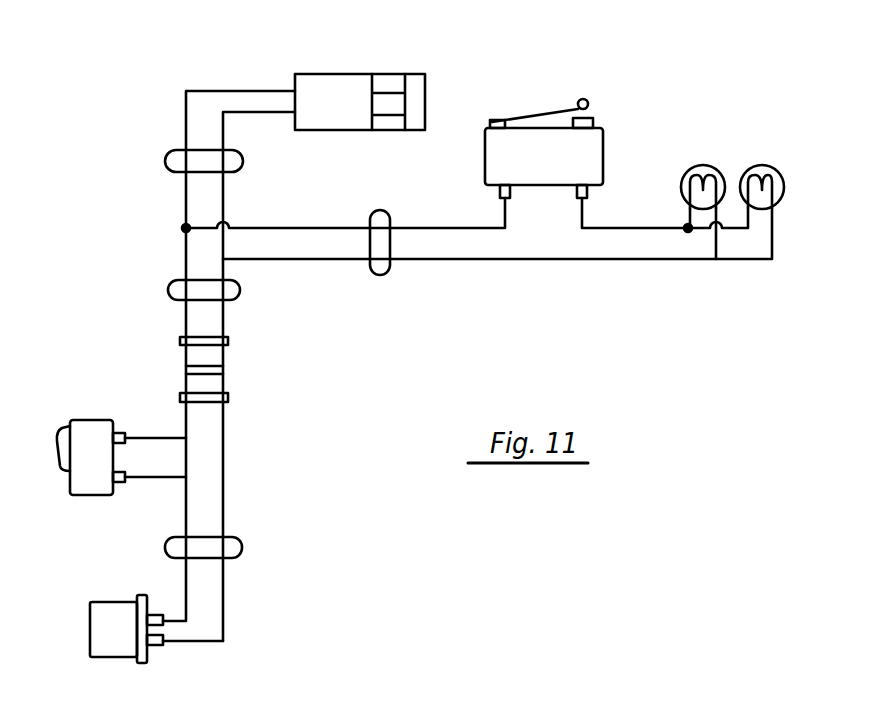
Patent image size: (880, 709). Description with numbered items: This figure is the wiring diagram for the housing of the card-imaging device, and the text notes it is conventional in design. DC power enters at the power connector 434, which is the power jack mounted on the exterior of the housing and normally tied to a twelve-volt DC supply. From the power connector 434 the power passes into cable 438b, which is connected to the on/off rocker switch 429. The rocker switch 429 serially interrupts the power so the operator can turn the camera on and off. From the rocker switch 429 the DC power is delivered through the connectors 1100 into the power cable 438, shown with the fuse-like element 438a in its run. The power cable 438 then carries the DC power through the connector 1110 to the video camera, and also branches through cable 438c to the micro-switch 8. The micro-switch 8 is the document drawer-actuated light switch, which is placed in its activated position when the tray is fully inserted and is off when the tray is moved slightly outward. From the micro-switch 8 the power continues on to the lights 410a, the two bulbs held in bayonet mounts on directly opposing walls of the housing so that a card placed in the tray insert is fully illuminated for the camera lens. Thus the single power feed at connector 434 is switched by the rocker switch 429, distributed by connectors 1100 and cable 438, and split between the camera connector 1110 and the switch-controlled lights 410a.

The connector 1110 is at (345, 75).
The power cable 438 is at (165, 155).
The fuse 438a is at (241, 290).
The cable 438b is at (242, 552).
The cable 438c is at (380, 275).
The connectors 1100 is at (229, 354).
The on/off rocker switch 429 is at (90, 428).
The power jack 434 is at (118, 608).
The micro-switch 8 is at (558, 172).
The lights 410a is at (753, 166).